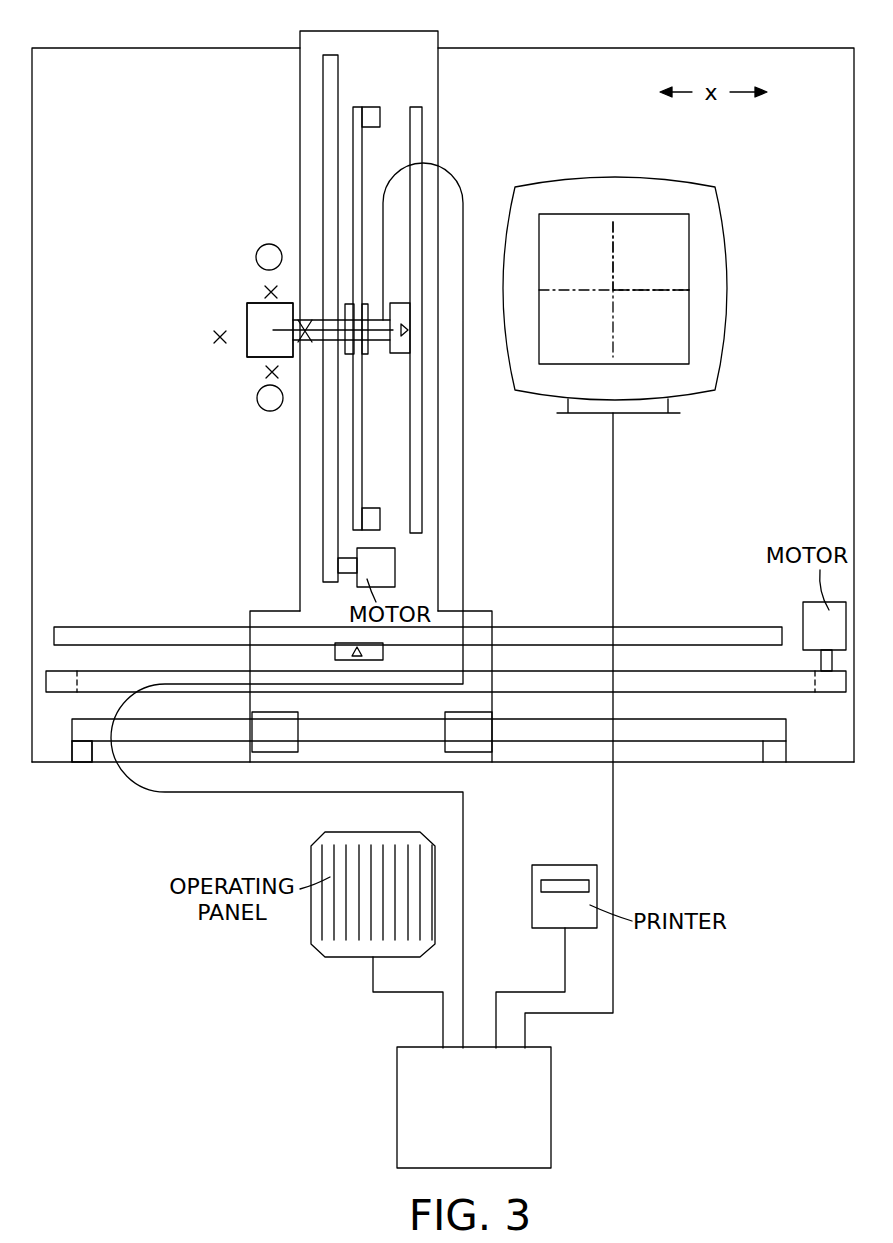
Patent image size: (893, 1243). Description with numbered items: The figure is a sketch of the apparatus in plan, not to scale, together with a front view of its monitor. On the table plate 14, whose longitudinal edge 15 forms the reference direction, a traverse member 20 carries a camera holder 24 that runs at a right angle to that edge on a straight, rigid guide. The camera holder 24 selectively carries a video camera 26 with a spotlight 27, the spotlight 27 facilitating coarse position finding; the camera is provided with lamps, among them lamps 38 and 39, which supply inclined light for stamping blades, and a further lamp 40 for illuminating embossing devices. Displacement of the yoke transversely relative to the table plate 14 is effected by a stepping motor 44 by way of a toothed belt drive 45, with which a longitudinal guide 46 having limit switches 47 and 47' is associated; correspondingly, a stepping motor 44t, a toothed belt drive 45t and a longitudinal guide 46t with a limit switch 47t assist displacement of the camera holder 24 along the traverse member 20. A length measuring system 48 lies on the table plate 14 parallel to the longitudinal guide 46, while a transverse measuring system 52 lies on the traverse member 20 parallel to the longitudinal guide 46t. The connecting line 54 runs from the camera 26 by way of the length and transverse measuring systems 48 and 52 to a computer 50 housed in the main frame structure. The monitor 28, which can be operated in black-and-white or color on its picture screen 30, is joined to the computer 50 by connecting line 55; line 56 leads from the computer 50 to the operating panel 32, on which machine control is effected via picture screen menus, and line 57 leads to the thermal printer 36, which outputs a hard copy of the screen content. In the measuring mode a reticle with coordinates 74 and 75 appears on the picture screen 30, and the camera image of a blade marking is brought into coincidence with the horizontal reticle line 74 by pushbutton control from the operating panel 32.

The table plate 14 is at (98, 215).
The longitudinal edge 15 is at (50, 765).
The traverse member 20 is at (427, 46).
The camera holder 24 is at (307, 342).
The video camera 26 is at (242, 300).
The spotlight 27 is at (258, 323).
The monitor 28 is at (675, 178).
The picture screen 30 is at (554, 256).
The operating panel 32 is at (331, 916).
The thermal printer 36 is at (552, 873).
The lamp 38 is at (265, 288).
The lamp 39 is at (306, 325).
The lamp 40 is at (266, 252).
The stepping motor 44 is at (812, 614).
The stepping motor 44t is at (392, 568).
The toothed belt drive 45 is at (680, 680).
The toothed belt drive 45t is at (332, 128).
The longitudinal guide 46 is at (735, 735).
The longitudinal guide 46t is at (353, 480).
The limit switch 47 is at (443, 772).
The limit switch 47' is at (94, 780).
The limit switch 47t is at (372, 512).
The length measuring system 48 is at (343, 648).
The computer 50 is at (553, 1081).
The transverse measuring system 52 is at (407, 341).
The connecting line 54 is at (210, 793).
The connecting line 55 is at (617, 468).
The line 56 is at (388, 993).
The line 57 is at (568, 953).
The horizontal reticle line 74 is at (665, 290).
The reticle coordinate 75 is at (613, 253).